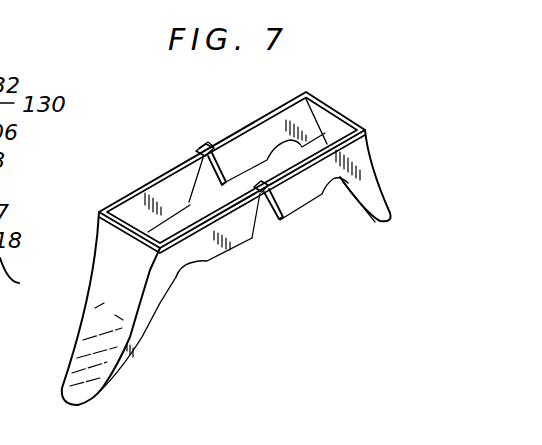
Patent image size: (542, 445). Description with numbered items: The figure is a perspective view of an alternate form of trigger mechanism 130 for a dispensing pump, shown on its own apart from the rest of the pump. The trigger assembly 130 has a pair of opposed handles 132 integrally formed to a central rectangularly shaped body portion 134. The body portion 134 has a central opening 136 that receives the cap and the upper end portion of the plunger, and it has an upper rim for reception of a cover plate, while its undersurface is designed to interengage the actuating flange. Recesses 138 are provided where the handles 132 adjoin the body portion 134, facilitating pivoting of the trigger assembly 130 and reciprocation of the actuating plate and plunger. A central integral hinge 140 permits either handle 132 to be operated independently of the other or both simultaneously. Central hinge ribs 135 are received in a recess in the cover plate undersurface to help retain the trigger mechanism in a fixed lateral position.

The alternate form of trigger mechanism 130 is at (245, 257).
The handle 132 is at (388, 203).
The body portion 134 is at (228, 105).
The central hinge rib 135 is at (207, 146).
The central opening 136 is at (317, 128).
The recess 138 is at (184, 273).
The central integral hinge 140 is at (266, 210).